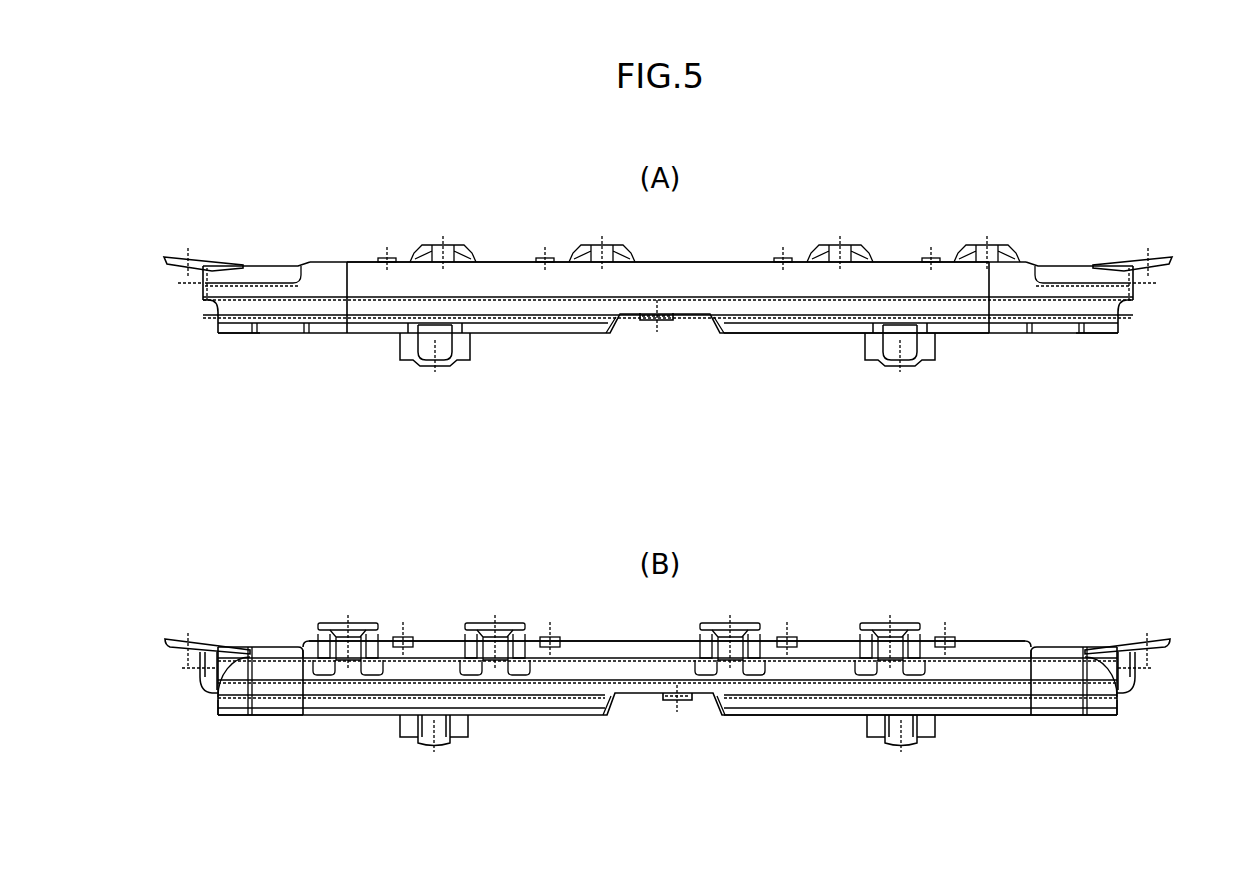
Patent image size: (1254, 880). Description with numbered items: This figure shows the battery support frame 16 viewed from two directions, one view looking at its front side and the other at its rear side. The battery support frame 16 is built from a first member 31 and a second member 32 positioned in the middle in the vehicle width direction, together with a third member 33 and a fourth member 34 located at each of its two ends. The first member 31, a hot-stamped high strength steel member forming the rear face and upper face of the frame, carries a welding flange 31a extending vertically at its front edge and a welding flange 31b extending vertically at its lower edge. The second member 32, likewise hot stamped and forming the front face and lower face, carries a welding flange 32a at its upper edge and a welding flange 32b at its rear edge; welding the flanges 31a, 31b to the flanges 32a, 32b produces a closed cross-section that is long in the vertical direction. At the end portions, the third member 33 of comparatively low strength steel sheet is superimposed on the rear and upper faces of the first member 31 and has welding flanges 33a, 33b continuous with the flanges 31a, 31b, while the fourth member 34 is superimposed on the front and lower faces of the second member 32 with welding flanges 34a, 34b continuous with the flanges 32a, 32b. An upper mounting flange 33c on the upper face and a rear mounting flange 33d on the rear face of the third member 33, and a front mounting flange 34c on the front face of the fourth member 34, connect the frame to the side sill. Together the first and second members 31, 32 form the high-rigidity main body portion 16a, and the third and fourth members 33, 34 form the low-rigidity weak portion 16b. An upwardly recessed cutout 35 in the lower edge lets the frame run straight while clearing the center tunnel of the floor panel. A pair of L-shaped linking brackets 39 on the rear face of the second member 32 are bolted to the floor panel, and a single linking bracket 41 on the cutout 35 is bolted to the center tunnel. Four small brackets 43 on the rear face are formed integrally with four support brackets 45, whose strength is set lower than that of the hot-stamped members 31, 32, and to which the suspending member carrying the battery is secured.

The battery support frame 16 is at (706, 232).
The main body portion 16a is at (760, 352).
The weak portion 16b is at (270, 350).
The first member 31 is at (632, 628).
The welding flange 31a is at (818, 648).
The welding flange 31b is at (813, 716).
The second member 32 is at (656, 250).
The welding flange 32a is at (721, 272).
The welding flange 32b is at (792, 334).
The third member 33 is at (207, 248).
The welding flange 33a is at (280, 655).
The welding flange 33b is at (287, 714).
The upper mounting flange 33c is at (188, 636).
The rear mounting flange 33d is at (200, 680).
The fourth member 34 is at (318, 250).
The welding flange 34a is at (267, 270).
The welding flange 34b is at (288, 335).
The front mounting flange 34c is at (202, 301).
The cutout 35 is at (620, 322).
The linking bracket 39 is at (435, 358).
The linking bracket 41 is at (658, 322).
The small bracket 43 is at (384, 257).
The support bracket 45 is at (441, 244).